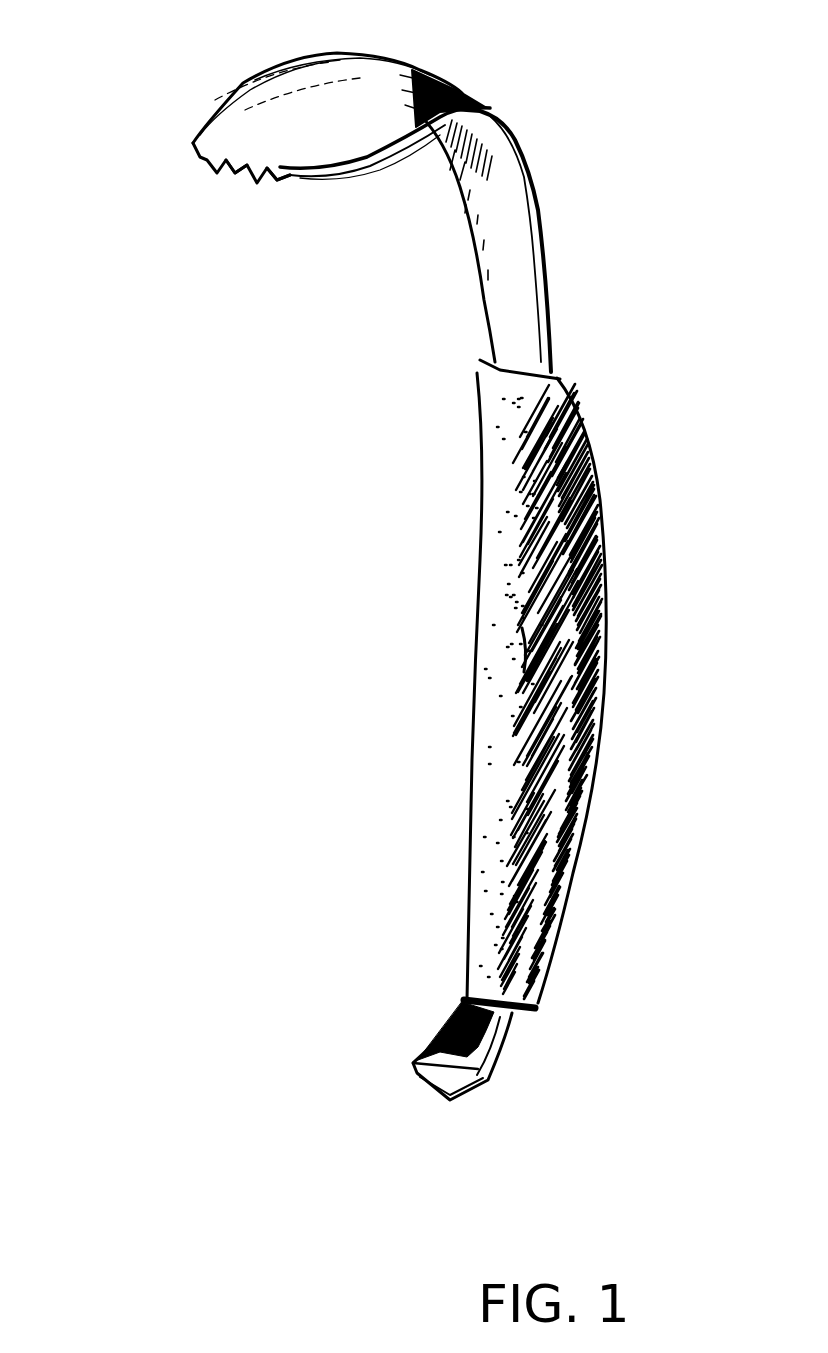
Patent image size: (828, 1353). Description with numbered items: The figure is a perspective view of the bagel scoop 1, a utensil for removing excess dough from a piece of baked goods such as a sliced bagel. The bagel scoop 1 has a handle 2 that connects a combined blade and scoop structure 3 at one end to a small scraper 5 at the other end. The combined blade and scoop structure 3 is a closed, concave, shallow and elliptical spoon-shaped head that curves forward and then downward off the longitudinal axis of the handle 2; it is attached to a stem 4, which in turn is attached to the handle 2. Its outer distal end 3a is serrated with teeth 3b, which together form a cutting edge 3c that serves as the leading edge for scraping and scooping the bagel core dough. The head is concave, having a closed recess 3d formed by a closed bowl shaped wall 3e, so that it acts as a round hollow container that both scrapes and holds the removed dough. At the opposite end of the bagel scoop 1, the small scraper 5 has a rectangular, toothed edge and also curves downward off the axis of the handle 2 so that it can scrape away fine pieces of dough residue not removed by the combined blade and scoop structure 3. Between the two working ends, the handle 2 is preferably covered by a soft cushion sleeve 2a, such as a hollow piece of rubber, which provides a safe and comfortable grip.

The bagel scoop 1 is at (628, 306).
The handle 2 is at (557, 366).
The soft cushion sleeve 2a is at (607, 615).
The combined blade and scoop structure 3 is at (358, 90).
The outer distal end 3a is at (183, 172).
The teeth 3b is at (237, 187).
The cutting edge 3c is at (287, 182).
The closed recess 3d is at (347, 187).
The closed bowl shaped wall 3e is at (260, 110).
The stem 4 is at (543, 227).
The small scraper 5 is at (483, 1077).